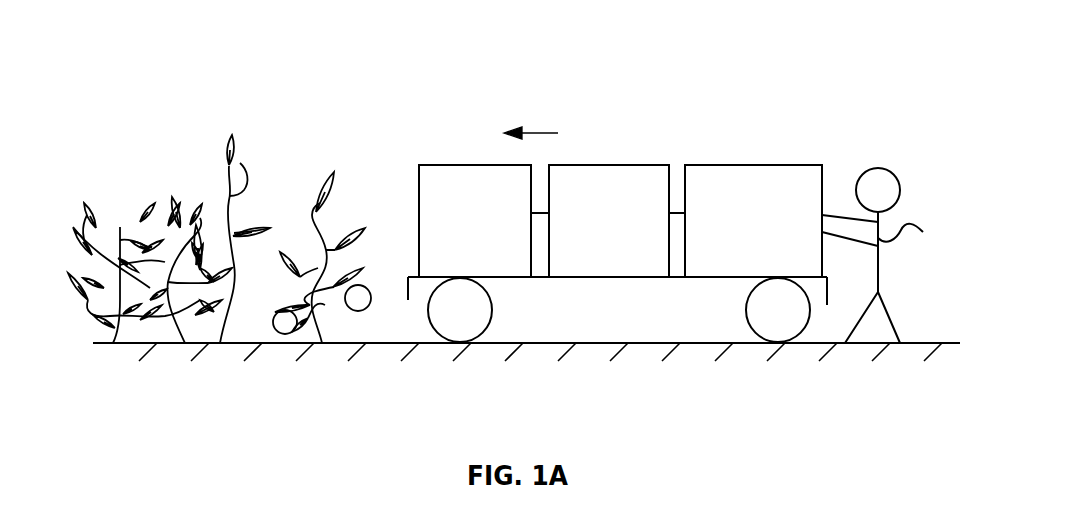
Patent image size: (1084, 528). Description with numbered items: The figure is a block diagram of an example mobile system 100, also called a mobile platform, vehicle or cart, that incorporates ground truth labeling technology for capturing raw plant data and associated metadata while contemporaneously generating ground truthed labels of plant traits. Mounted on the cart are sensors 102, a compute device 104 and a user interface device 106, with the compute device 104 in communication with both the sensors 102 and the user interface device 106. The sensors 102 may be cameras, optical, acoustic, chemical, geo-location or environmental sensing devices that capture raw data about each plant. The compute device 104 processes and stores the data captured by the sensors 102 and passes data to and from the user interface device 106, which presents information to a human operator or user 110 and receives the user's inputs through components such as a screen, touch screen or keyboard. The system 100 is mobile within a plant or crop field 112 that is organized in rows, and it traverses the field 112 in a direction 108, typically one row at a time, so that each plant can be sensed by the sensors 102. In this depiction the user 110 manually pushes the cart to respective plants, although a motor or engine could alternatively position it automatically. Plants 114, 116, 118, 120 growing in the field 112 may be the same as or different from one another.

The mobile system 100 is at (738, 141).
The sensors 102 is at (475, 221).
The compute device 104 is at (609, 221).
The user interface device 106 is at (753, 221).
The direction 108 is at (558, 133).
The user 110 is at (889, 255).
The plant or crop field 112 is at (188, 83).
The plant 114 is at (334, 185).
The plant 116 is at (240, 163).
The plant 118 is at (200, 207).
The plant 120 is at (87, 215).